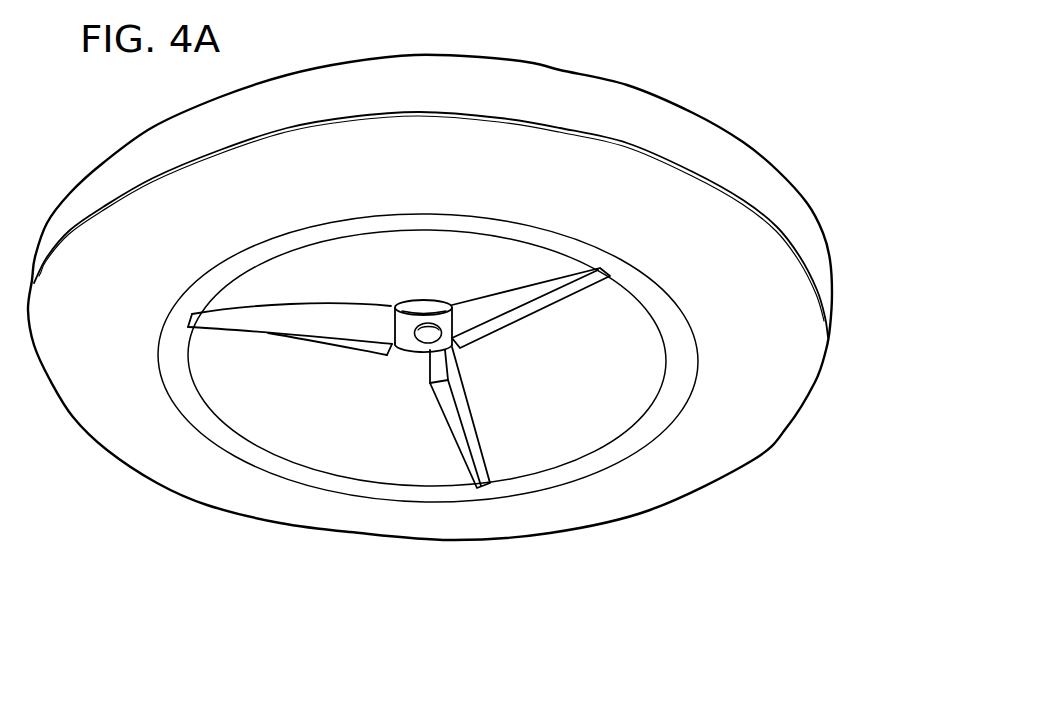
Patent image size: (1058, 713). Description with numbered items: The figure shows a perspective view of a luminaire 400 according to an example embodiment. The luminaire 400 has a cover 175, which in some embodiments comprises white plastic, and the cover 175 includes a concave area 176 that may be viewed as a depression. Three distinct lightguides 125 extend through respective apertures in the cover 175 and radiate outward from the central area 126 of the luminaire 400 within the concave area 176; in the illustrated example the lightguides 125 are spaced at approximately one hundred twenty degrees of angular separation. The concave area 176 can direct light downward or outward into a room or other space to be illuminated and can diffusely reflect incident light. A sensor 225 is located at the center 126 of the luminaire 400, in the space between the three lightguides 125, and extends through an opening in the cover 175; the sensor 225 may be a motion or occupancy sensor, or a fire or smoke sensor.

The luminaire 400 is at (757, 115).
The cover 175 is at (767, 327).
The concave area 176 is at (320, 425).
The lightguides 125 is at (342, 328).
The center 126 is at (402, 353).
The sensor 225 is at (429, 325).